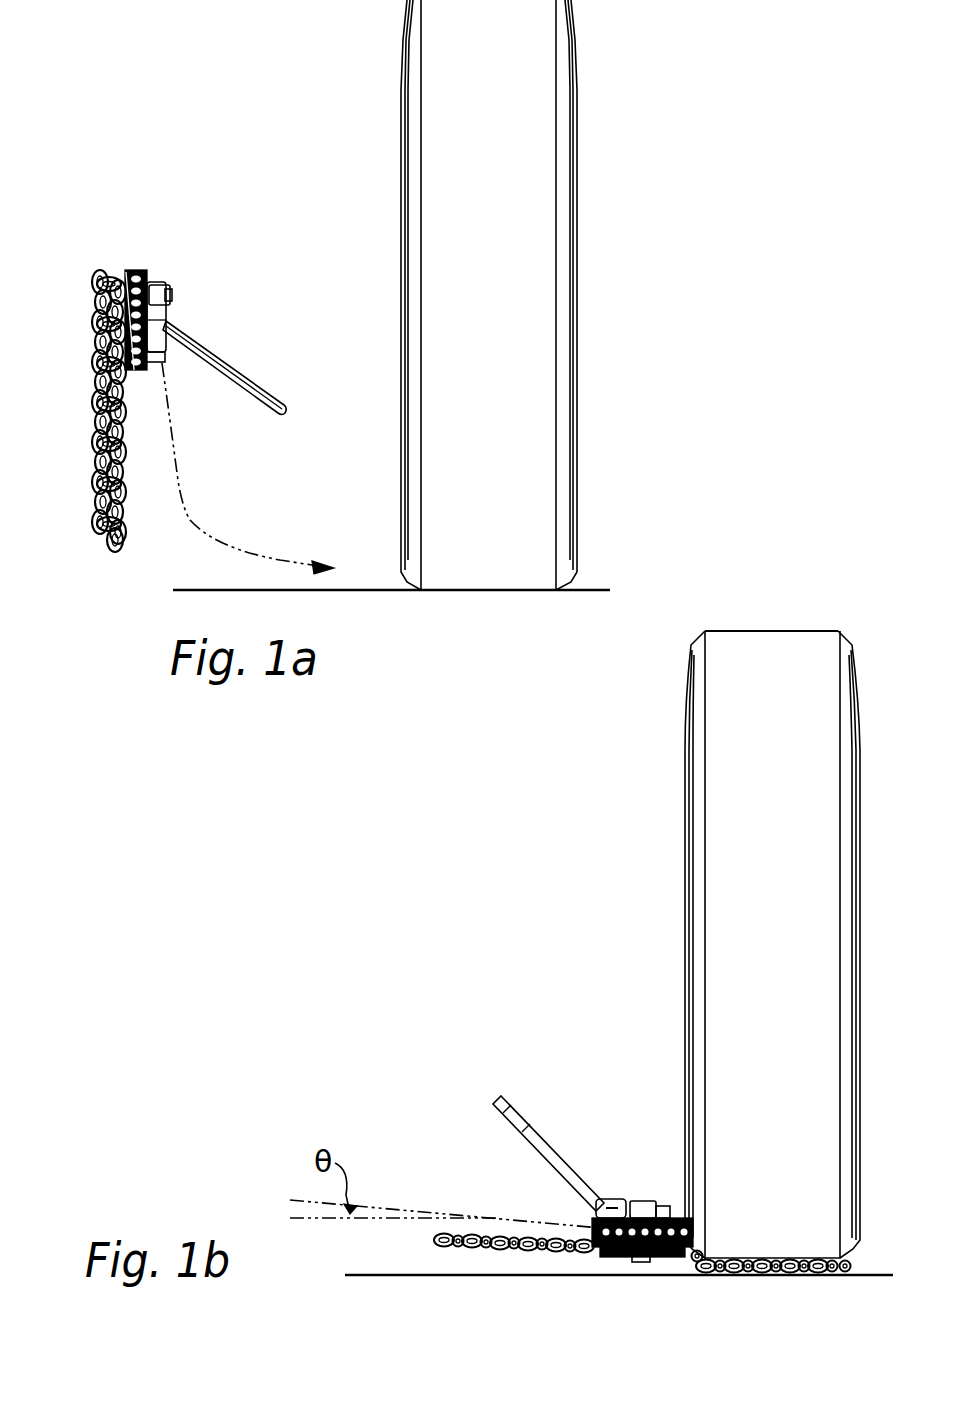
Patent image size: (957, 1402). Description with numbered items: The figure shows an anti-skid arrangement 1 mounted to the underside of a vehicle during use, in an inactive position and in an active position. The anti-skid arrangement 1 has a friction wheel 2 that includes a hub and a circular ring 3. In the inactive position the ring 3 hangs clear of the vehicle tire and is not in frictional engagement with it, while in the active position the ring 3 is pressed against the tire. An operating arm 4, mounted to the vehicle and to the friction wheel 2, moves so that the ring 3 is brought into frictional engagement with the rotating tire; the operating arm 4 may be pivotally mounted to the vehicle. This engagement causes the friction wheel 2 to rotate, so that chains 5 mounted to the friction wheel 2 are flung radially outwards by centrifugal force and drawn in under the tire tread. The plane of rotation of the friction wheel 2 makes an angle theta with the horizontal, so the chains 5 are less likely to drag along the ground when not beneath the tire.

In FIG. 1A, the anti-skid arrangement 1 is at (250, 266).
In FIG. 1B, the anti-skid arrangement 1 is at (586, 1088).
In FIG. 1A, the friction wheel 2 is at (156, 264).
In FIG. 1B, the friction wheel 2 is at (668, 1192).
In FIG. 1A, the ring 3 is at (152, 372).
In FIG. 1B, the ring 3 is at (587, 1227).
In FIG. 1A, the operating arm 4 is at (281, 409).
In FIG. 1B, the operating arm 4 is at (527, 1115).
In FIG. 1A, the chains 5 is at (88, 383).
In FIG. 1B, the chains 5 is at (460, 1232).